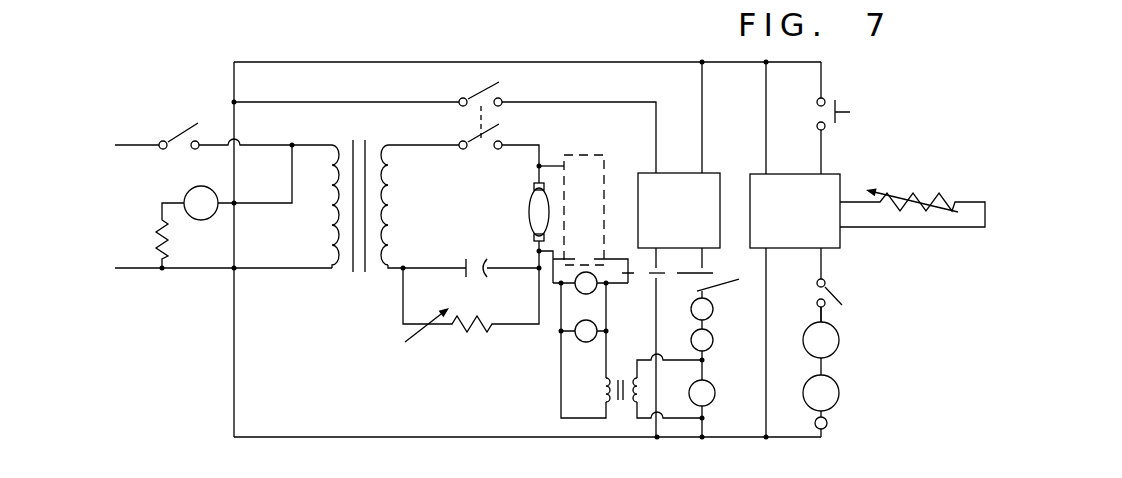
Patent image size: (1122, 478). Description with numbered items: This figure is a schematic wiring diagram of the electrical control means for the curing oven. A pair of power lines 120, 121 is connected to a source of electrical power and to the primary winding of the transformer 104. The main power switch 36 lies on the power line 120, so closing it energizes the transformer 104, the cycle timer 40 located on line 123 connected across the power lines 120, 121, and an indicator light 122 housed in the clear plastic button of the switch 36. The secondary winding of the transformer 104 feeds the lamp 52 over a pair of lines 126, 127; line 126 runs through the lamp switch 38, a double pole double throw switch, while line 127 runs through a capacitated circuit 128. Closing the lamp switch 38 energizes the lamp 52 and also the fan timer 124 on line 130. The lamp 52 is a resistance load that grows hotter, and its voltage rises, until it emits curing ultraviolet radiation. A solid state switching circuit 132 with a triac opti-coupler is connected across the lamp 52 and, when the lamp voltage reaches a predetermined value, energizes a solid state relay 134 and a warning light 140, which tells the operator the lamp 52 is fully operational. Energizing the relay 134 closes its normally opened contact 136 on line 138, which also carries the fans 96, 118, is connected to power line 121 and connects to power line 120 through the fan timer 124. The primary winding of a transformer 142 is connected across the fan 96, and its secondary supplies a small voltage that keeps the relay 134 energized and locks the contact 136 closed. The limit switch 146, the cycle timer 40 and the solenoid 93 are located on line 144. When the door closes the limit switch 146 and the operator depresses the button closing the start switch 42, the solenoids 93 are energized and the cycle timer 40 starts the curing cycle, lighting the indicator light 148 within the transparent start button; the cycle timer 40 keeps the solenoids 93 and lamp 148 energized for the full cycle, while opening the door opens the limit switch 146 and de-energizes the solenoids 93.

The power line 120 is at (140, 121).
The power line 121 is at (138, 269).
The main power switch 36 is at (184, 134).
The indicator light 122 is at (186, 193).
The transformer 104 is at (345, 269).
The lamp switch 38 is at (473, 97).
The line 126 is at (425, 148).
The line 127 is at (423, 268).
The lamp 52 is at (529, 186).
The capacitated circuit 128 is at (468, 321).
The solid state switching circuit 132 is at (572, 155).
The solid state relay 134 is at (578, 292).
The warning light 140 is at (578, 340).
The transformer 142 is at (630, 404).
The line 138 is at (701, 438).
The fan 96 is at (707, 402).
The fan 118 is at (706, 312).
The normally opened contact 136 is at (715, 272).
The line 130 is at (680, 100).
The fan timer 124 is at (710, 178).
The line 123 is at (790, 95).
The start switch 42 is at (838, 101).
The cycle timer 40 is at (832, 240).
The limit switch 146 is at (832, 294).
The line 144 is at (826, 313).
The solenoid 93 is at (832, 341).
The indicator light 148 is at (828, 423).